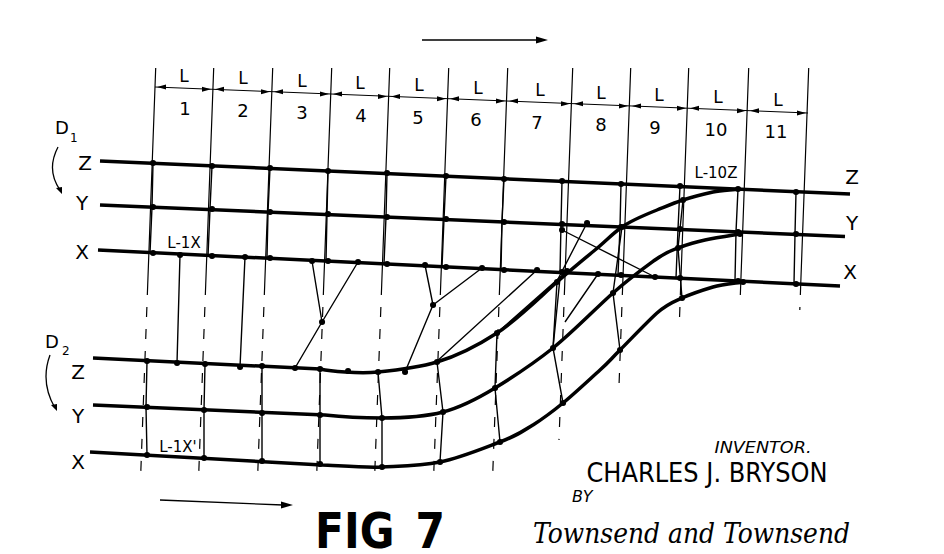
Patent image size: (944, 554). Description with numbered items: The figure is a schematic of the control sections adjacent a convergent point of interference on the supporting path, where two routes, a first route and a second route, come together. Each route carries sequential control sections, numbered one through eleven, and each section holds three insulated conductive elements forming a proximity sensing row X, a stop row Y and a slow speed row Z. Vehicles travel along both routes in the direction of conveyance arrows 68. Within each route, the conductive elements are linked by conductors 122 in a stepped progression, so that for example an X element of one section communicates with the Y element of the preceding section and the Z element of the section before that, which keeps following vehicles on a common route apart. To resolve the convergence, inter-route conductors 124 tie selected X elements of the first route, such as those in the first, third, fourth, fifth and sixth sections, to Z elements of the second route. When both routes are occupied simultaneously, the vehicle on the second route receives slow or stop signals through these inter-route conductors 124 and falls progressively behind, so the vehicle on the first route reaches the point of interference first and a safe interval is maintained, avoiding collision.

The conveyance arrow 68 is at (465, 40).
The conductor 122 is at (383, 193).
The inter-route conductor 124 is at (184, 306).